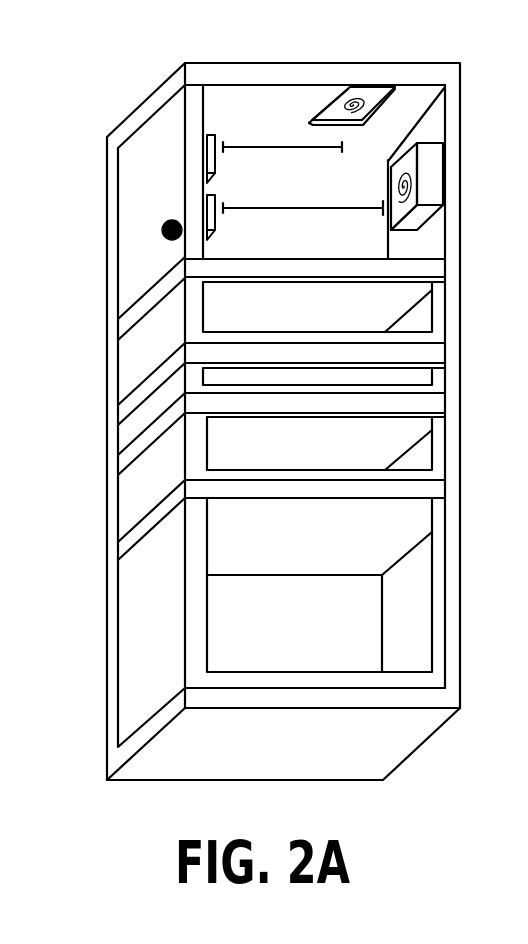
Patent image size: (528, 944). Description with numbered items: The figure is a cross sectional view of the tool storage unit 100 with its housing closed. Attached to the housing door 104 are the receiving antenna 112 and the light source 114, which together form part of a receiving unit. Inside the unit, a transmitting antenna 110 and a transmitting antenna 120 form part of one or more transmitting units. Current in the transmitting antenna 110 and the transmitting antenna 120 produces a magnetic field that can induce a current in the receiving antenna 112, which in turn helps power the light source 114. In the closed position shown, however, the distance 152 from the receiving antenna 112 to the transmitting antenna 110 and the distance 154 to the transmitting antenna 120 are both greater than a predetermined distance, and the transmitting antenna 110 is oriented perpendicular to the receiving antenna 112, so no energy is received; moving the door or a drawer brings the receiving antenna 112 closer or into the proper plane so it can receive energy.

The tool storage unit 100 is at (233, 63).
The housing door 104 is at (185, 188).
The transmitting antenna 110 is at (320, 110).
The receiving antenna 112 is at (215, 167).
The light source 114 is at (215, 226).
The transmitting antenna 120 is at (395, 201).
The distance 152 is at (315, 139).
The distance 154 is at (303, 195).